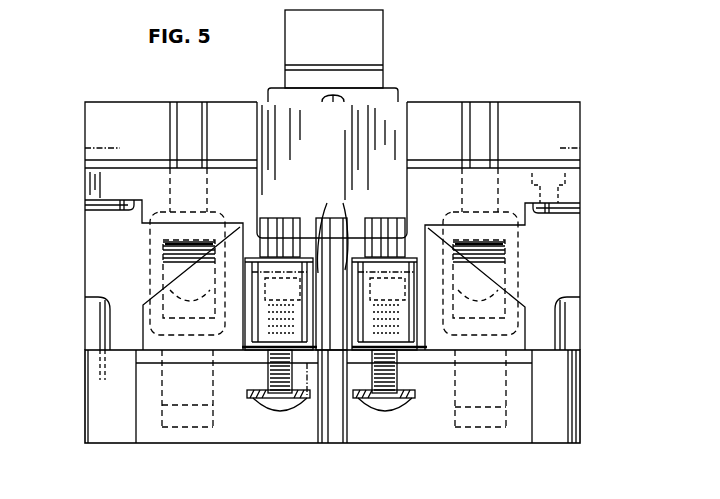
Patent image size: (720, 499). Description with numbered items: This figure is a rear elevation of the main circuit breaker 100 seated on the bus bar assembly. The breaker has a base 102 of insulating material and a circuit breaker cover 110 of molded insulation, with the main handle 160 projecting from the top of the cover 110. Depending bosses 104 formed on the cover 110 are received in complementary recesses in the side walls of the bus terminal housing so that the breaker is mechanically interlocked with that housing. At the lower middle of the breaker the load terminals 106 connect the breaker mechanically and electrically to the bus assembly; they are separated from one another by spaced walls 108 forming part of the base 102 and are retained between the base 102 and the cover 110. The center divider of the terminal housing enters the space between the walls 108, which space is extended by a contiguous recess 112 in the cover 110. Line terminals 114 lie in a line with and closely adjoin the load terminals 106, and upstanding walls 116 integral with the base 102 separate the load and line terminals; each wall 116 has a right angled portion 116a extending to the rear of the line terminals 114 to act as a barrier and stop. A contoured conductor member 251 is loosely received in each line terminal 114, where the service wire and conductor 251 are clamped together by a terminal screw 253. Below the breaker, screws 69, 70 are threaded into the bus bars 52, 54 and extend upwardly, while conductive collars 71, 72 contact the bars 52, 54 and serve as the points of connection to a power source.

The main circuit breaker 100 is at (557, 93).
The base 102 is at (582, 376).
The depending bosses 104 is at (108, 208).
The load terminals 106 is at (252, 349).
The spaced walls 108 is at (335, 266).
The circuit breaker cover 110 is at (108, 102).
The recess 112 is at (342, 228).
The line terminals 114 is at (155, 250).
The upstanding walls 116 is at (240, 224).
The right angled portion 116a is at (176, 272).
The main handle 160 is at (391, 21).
The contoured conductor member 251 is at (175, 405).
The terminal screws 253 is at (174, 243).
The bus bar 52 is at (410, 399).
The bus bar 54 is at (250, 399).
The screw 69 is at (392, 415).
The screw 70 is at (292, 415).
The conductive collar 71 is at (408, 376).
The conductive collar 72 is at (253, 377).